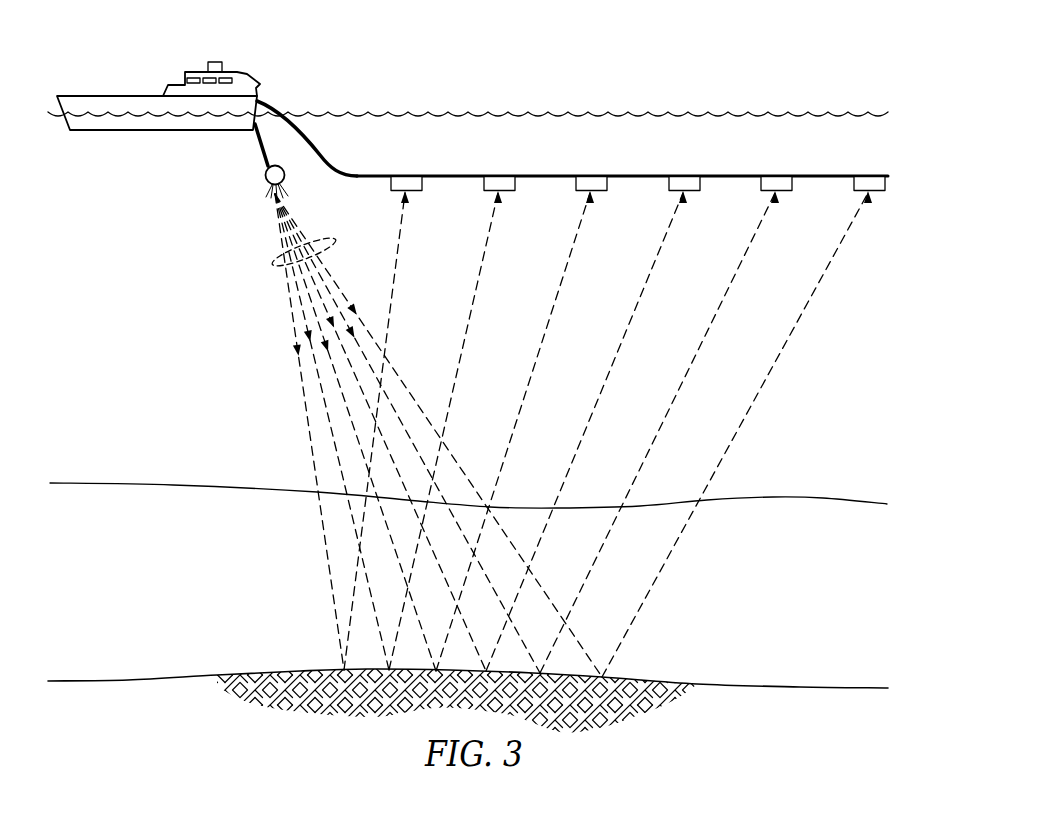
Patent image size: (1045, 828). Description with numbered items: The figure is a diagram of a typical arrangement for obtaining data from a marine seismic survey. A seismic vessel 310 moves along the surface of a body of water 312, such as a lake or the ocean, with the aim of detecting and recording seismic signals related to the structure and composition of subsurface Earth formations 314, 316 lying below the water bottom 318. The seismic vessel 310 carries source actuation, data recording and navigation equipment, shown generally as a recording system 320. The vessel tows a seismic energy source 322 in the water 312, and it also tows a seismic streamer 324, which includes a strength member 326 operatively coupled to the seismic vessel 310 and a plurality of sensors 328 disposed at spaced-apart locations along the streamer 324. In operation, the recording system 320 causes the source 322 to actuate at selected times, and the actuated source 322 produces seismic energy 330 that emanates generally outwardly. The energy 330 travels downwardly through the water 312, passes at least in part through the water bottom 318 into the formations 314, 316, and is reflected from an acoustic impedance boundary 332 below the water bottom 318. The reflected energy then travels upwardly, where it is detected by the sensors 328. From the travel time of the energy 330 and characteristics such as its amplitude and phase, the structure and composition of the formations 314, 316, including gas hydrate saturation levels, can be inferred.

The seismic vessel 310 is at (141, 96).
The body of water 312 is at (197, 324).
The subsurface Earth formation 314 is at (197, 592).
The subsurface Earth formation 316 is at (198, 735).
The water bottom 318 is at (168, 484).
The recording system 320 is at (215, 62).
The seismic energy source 322 is at (265, 174).
The seismic streamer 324 is at (374, 191).
The strength member 326 is at (347, 173).
The sensors 328 is at (415, 192).
The seismic energy 330 is at (271, 262).
The acoustic impedance boundary 332 is at (128, 680).